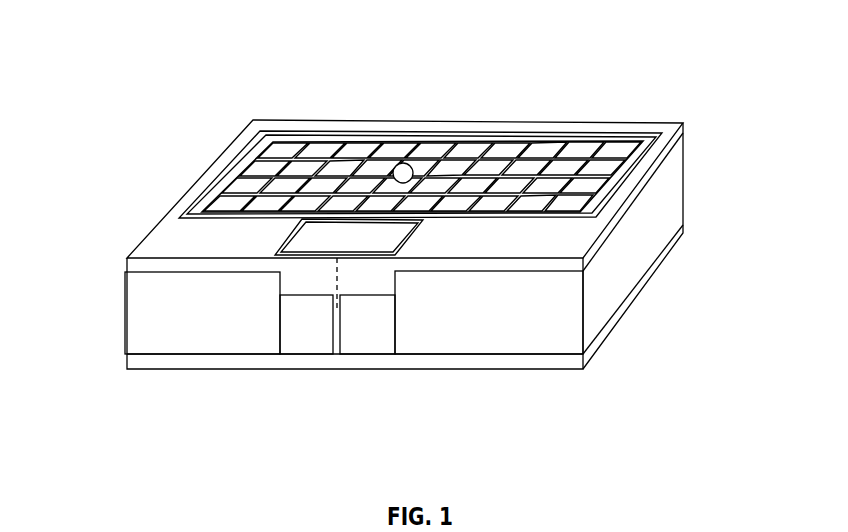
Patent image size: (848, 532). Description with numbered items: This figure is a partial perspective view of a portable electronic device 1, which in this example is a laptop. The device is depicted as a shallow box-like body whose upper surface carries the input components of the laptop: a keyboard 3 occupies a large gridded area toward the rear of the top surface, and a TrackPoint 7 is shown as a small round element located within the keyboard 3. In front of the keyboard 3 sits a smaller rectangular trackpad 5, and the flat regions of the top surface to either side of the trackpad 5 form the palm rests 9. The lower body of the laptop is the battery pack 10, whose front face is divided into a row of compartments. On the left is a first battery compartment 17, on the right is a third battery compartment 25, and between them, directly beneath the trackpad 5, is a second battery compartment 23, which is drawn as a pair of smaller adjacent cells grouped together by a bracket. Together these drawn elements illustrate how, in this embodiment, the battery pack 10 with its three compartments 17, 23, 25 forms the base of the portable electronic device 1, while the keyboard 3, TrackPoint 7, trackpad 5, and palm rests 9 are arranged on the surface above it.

The portable electronic device 1 is at (511, 62).
The battery pack 10 is at (721, 154).
The palm rests 9 is at (202, 235).
The keyboard 3 is at (322, 153).
The TrackPoint 7 is at (408, 171).
The trackpad 5 is at (387, 240).
The first battery compartment 17 is at (189, 321).
The third battery compartment 25 is at (490, 322).
The second battery compartment 23 is at (279, 355).